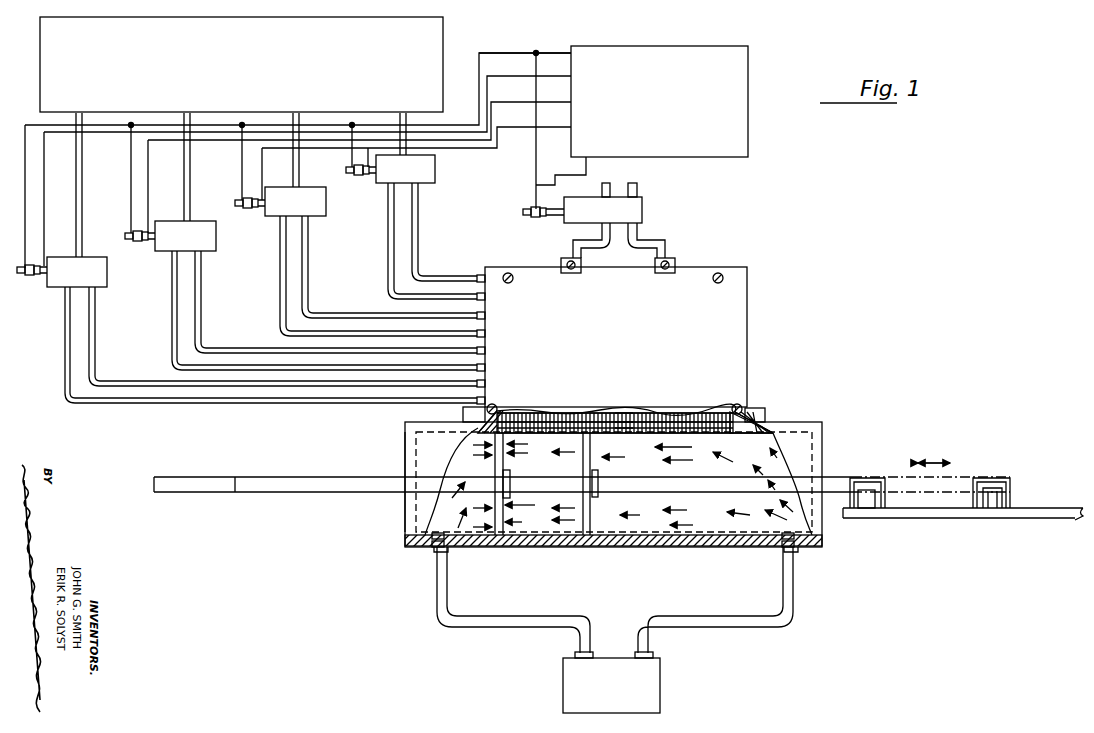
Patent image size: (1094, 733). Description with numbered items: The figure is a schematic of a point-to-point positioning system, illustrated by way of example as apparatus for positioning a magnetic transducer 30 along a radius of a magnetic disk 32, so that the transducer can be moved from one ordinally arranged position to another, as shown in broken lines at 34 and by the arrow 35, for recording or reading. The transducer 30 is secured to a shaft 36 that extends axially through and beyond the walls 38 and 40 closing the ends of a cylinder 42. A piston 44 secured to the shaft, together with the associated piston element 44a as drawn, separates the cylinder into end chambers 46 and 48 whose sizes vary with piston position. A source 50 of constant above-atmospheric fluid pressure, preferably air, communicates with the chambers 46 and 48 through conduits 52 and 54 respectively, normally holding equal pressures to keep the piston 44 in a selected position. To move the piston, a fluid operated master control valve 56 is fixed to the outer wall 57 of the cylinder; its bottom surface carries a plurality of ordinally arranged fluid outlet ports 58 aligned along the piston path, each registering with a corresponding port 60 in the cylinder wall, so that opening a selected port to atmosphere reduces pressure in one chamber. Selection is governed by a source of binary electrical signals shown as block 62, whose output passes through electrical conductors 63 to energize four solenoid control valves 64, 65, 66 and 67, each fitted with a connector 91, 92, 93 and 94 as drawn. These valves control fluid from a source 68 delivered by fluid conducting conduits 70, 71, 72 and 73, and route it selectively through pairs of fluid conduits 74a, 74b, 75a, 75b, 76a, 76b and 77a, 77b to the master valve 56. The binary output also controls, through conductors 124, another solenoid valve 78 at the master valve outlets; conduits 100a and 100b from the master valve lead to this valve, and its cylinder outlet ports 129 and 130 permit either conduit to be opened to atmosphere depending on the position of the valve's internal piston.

The source 68 is at (257, 62).
The source of binary electrical signals 62 is at (670, 100).
The electrical conductors 63 is at (512, 76).
The fluid conducting conduit 70 is at (83, 163).
The fluid conducting conduit 71 is at (190, 165).
The fluid conducting conduit 72 is at (300, 160).
The fluid conducting conduit 73 is at (404, 120).
The solenoid control valve 64 is at (87, 281).
The solenoid control valve 65 is at (195, 245).
The solenoid control valve 66 is at (305, 211).
The solenoid control valve 67 is at (415, 178).
The connector 91 is at (30, 279).
The connector 92 is at (147, 244).
The connector 93 is at (262, 210).
The connector 94 is at (372, 176).
The fluid conduit 74a is at (65, 362).
The fluid conduit 74b is at (95, 359).
The fluid conduit 75a is at (172, 330).
The fluid conduit 75b is at (201, 323).
The fluid conduit 76a is at (280, 304).
The fluid conduit 76b is at (308, 297).
The fluid conduit 77a is at (388, 266).
The fluid conduit 77b is at (418, 257).
The conductors 124 is at (553, 185).
The cylinder outlet port 129 is at (611, 188).
The cylinder outlet port 130 is at (640, 190).
The solenoid valve 78 is at (613, 220).
The conduit 100a is at (570, 245).
The conduit 100b is at (665, 245).
The master control valve 56 is at (635, 335).
The fluid outlet ports 58 is at (558, 411).
The port 60 is at (621, 433).
The outer wall 57 is at (717, 433).
The cylinder 42 is at (832, 420).
The wall 40 is at (821, 463).
The wall 38 is at (405, 457).
The shaft 36 is at (310, 483).
The piston 44 is at (500, 540).
The disc 44a is at (598, 522).
The end chamber 46 is at (455, 546).
The end chamber 48 is at (738, 522).
The conduit 52 is at (437, 602).
The conduit 54 is at (793, 585).
The source of constant above atmospheric fluid pressure 50 is at (617, 698).
The magnetic transducer 30 is at (868, 490).
The magnetic disk 32 is at (1030, 510).
The broken-line position 34 is at (985, 478).
The arrow 35 is at (934, 449).